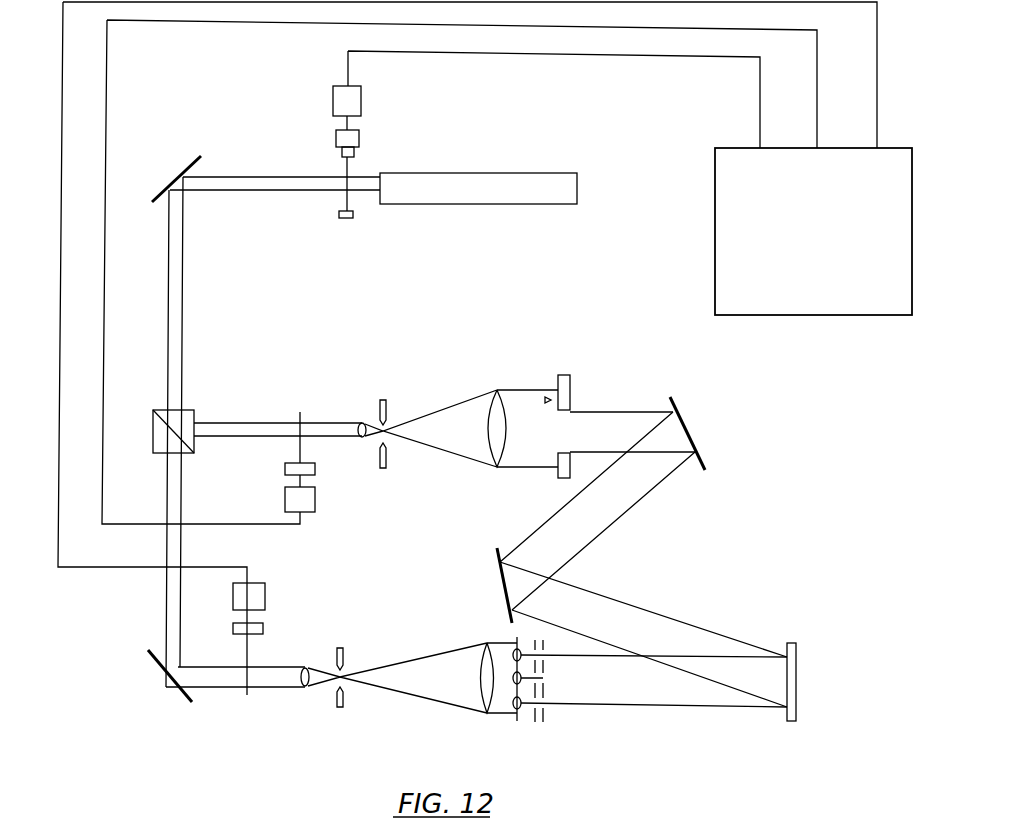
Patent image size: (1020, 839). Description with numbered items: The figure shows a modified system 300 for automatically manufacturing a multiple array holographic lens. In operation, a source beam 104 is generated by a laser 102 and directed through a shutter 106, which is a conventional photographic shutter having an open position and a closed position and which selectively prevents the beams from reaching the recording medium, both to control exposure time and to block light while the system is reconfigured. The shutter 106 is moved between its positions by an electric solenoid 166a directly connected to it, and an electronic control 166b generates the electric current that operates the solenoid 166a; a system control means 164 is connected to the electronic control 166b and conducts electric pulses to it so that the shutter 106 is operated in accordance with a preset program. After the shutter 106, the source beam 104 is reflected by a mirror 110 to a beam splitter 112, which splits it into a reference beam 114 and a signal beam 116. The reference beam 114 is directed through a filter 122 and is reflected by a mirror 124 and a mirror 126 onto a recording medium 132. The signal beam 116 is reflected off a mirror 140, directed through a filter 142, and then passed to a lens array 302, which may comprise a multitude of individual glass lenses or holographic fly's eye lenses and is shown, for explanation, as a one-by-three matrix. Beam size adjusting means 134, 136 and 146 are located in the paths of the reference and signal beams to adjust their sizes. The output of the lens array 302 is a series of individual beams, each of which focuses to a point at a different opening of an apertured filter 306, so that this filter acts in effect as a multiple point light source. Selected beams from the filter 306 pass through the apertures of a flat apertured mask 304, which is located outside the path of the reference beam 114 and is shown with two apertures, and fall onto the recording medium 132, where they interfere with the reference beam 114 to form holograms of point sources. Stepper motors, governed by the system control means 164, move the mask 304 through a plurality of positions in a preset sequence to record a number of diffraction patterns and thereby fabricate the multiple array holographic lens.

The laser 102 is at (476, 173).
The source beam 104 is at (290, 177).
The shutter 106 is at (338, 205).
The mirror 110 is at (172, 186).
The beam splitter 112 is at (153, 430).
The reference beam 114 is at (217, 430).
The signal beam 116 is at (168, 612).
The filter 122 is at (297, 412).
The mirror 124 is at (700, 462).
The mirror 126 is at (497, 560).
The recording medium 132 is at (797, 655).
The beam size adjusting means 134 is at (412, 398).
The beam size adjusting means 136 is at (558, 472).
The mirror 140 is at (185, 698).
The filter 142 is at (242, 697).
The beam size adjusting means 146 is at (366, 703).
The system control means 164 is at (485, 292).
The electric solenoid 166a is at (353, 138).
The electronic control 166b is at (353, 104).
The modified system 300 is at (514, 281).
The lens array 302 is at (510, 721).
The flat apertured mask 304 is at (548, 722).
The apertured filter 306 is at (535, 725).